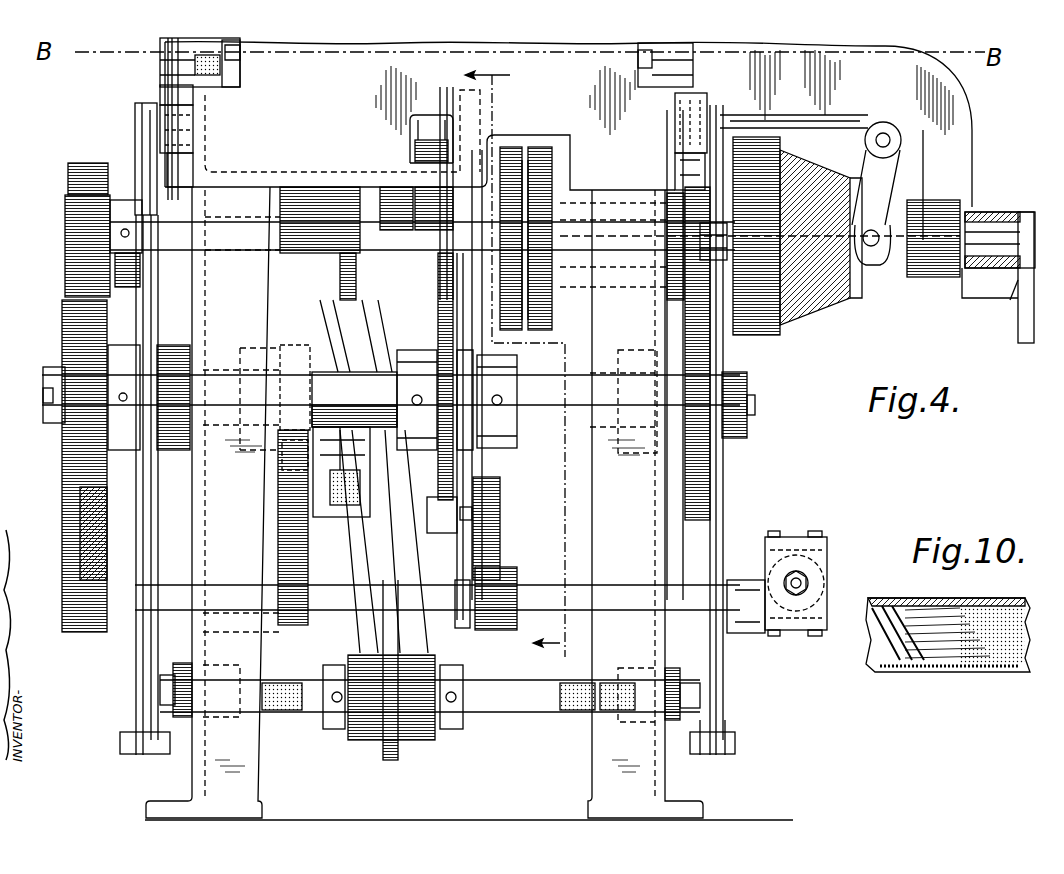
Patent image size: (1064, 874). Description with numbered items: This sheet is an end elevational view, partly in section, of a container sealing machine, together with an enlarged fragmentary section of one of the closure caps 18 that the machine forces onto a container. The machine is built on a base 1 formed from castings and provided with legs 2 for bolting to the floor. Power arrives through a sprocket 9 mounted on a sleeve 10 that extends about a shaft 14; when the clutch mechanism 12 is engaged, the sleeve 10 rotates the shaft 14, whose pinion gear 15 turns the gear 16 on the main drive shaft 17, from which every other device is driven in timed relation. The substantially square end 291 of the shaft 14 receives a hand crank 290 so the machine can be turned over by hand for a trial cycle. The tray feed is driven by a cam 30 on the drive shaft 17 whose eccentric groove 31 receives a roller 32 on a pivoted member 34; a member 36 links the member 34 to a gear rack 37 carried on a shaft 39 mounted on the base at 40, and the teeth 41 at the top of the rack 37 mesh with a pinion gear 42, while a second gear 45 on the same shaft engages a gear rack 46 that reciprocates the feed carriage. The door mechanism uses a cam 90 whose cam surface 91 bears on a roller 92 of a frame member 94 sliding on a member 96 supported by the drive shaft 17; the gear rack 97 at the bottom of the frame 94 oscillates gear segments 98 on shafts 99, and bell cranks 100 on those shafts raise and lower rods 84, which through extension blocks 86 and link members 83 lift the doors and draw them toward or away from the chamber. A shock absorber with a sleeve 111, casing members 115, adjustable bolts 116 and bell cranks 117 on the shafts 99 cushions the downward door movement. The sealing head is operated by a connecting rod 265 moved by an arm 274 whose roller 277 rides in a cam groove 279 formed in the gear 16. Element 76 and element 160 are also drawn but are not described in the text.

In FIG. 4, the base 1 is at (591, 421).
In FIG. 4, the legs 2 is at (233, 785).
In FIG. 4, the sprocket 9 is at (537, 160).
In FIG. 4, the sleeve 10 is at (568, 207).
In FIG. 4, the clutch mechanism 12 is at (795, 325).
In FIG. 4, the shaft 14 is at (330, 233).
In FIG. 4, the pinion gear 15 is at (77, 237).
In FIG. 4, the gear 16 is at (67, 600).
In FIG. 4, the drive shaft 17 is at (550, 410).
In FIG. 10, the caps 18 is at (995, 598).
In FIG. 4, the cam 30 is at (310, 558).
In FIG. 4, the eccentric groove 31 is at (282, 332).
In FIG. 4, the roller 32 is at (280, 470).
In FIG. 4, the member 34 is at (328, 364).
In FIG. 4, the member 36 is at (368, 500).
In FIG. 4, the gear rack 37 is at (333, 333).
In FIG. 4, the shaft 39 is at (528, 703).
In FIG. 4, the mounting on base 40 is at (297, 713).
In FIG. 4, the teeth 41 is at (387, 242).
In FIG. 4, the pinion gear 42 is at (390, 202).
In FIG. 4, the second gear 45 is at (427, 183).
In FIG. 4, the gear rack 46 is at (430, 132).
In FIG. 4, the bolt 76 is at (240, 52).
In FIG. 4, the link members 83 is at (160, 92).
In FIG. 4, the rods 84 is at (143, 497).
In FIG. 4, the extension blocks 86 is at (190, 148).
In FIG. 4, the cam 90 is at (452, 472).
In FIG. 4, the cam surface 91 is at (447, 293).
In FIG. 4, the roller 92 is at (445, 522).
In FIG. 4, the frame member 94 is at (461, 630).
In FIG. 4, the member 96 is at (460, 392).
In FIG. 4, the gear rack 97 is at (500, 527).
In FIG. 4, the gear segments 98 is at (513, 630).
In FIG. 4, the shafts 99 is at (570, 600).
In FIG. 4, the bell crank 100 is at (143, 697).
In FIG. 4, the cylindrical sleeve 111 is at (823, 580).
In FIG. 4, the casing member 115 is at (817, 563).
In FIG. 4, the bolt 116 is at (797, 593).
In FIG. 4, the bell crank 117 is at (748, 633).
In FIG. 4, the gear 160 is at (700, 447).
In FIG. 4, the connecting rod 265 is at (167, 50).
In FIG. 4, the arm 274 is at (137, 142).
In FIG. 4, the roller 277 is at (80, 290).
In FIG. 4, the cam groove 279 is at (80, 550).
In FIG. 4, the crank 290 is at (1020, 318).
In FIG. 4, the square end 291 is at (1010, 228).